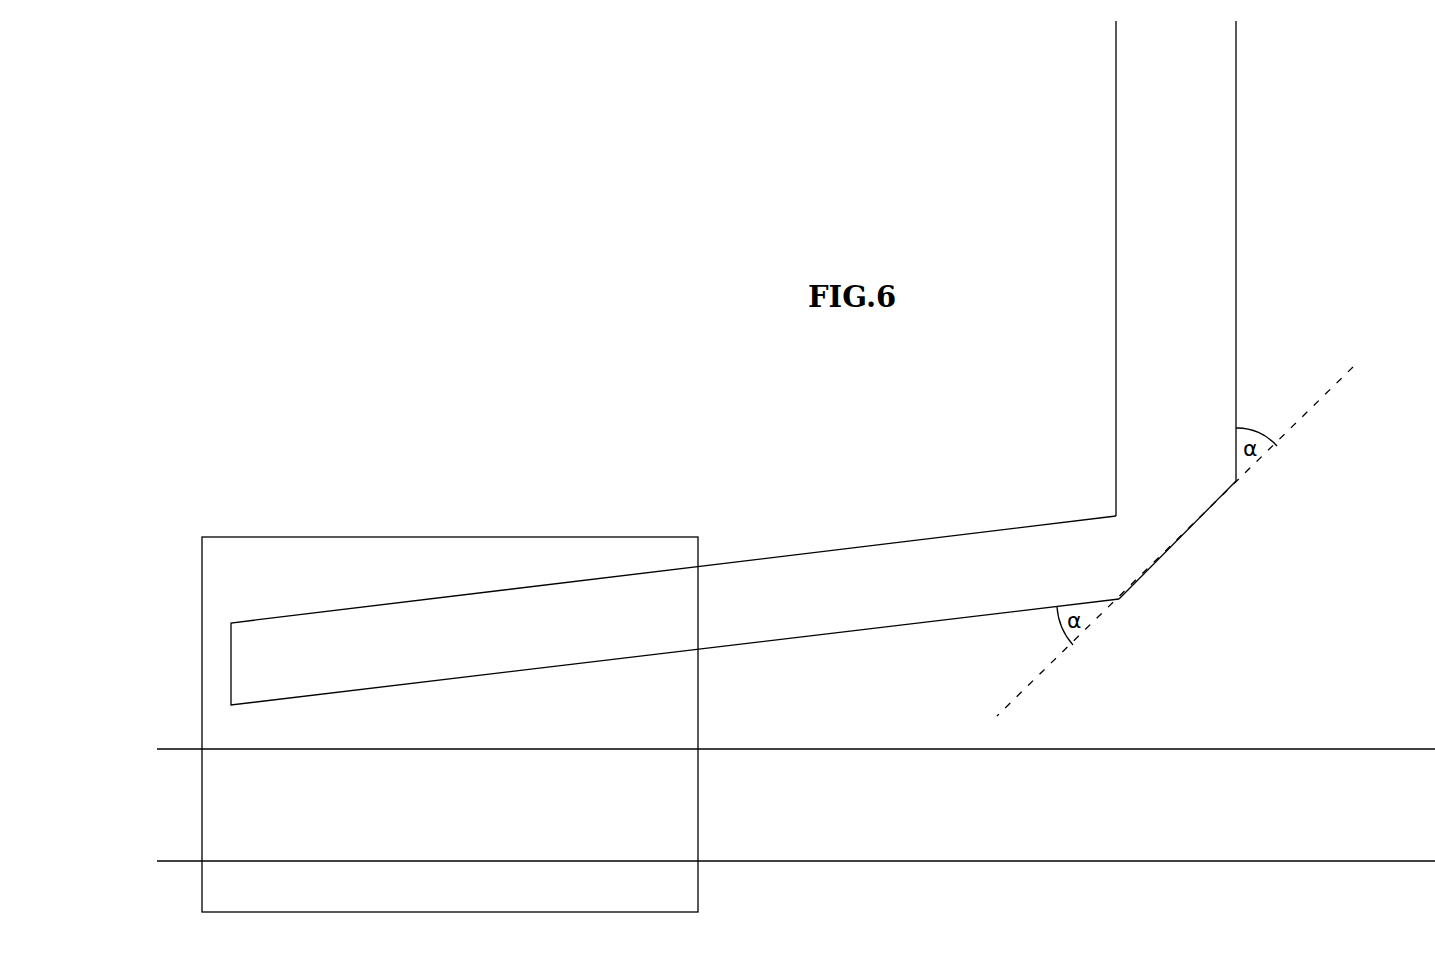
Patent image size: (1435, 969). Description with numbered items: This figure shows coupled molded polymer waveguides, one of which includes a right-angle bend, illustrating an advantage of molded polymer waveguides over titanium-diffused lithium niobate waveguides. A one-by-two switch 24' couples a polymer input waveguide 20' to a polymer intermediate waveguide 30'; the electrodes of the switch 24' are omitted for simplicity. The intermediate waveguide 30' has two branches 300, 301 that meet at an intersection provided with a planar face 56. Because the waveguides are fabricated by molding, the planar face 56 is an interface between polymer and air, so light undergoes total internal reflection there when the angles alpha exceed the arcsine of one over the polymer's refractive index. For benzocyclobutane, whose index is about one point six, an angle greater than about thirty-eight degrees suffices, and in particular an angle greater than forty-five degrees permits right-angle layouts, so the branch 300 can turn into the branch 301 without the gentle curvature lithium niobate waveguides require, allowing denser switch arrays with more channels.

The polymer input waveguide 20' is at (796, 805).
The 1×2 switch 24' is at (450, 693).
The polymer intermediate waveguide 30' is at (778, 363).
The branch of intermediate waveguide 301 is at (1199, 236).
The branch of intermediate waveguide 300 is at (840, 611).
The planar face 56 is at (1178, 542).